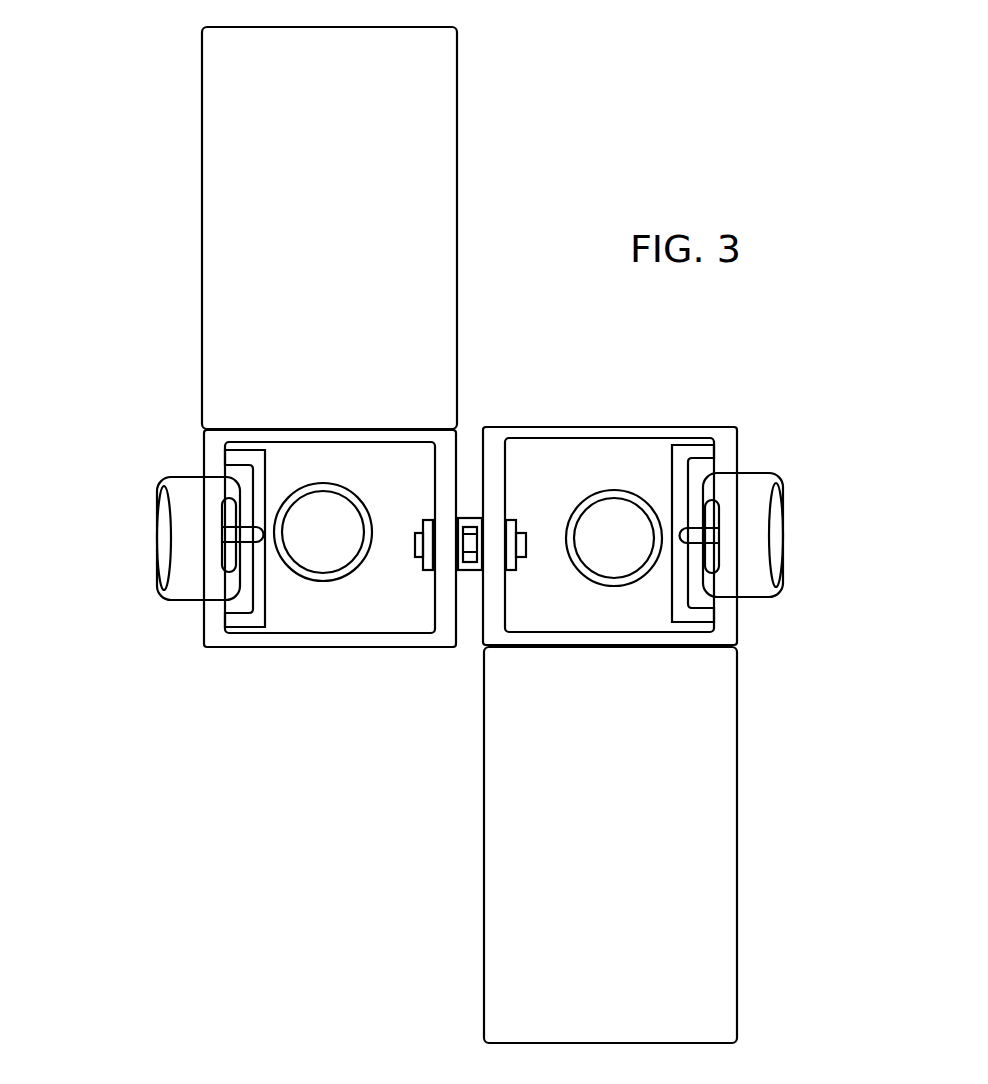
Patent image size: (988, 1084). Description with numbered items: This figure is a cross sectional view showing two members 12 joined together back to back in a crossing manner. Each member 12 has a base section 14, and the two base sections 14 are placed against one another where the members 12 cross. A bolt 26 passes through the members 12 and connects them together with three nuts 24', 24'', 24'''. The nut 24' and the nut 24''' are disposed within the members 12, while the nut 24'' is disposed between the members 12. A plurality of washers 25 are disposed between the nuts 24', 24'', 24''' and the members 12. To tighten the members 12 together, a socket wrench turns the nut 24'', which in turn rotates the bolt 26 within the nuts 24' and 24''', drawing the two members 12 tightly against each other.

The member 12 is at (238, 243).
The base section 14 is at (492, 458).
The nut 24' is at (405, 523).
The nut 24'' is at (448, 603).
The nut 24''' is at (554, 566).
The washer 25 is at (430, 570).
The bolt 26 is at (527, 545).